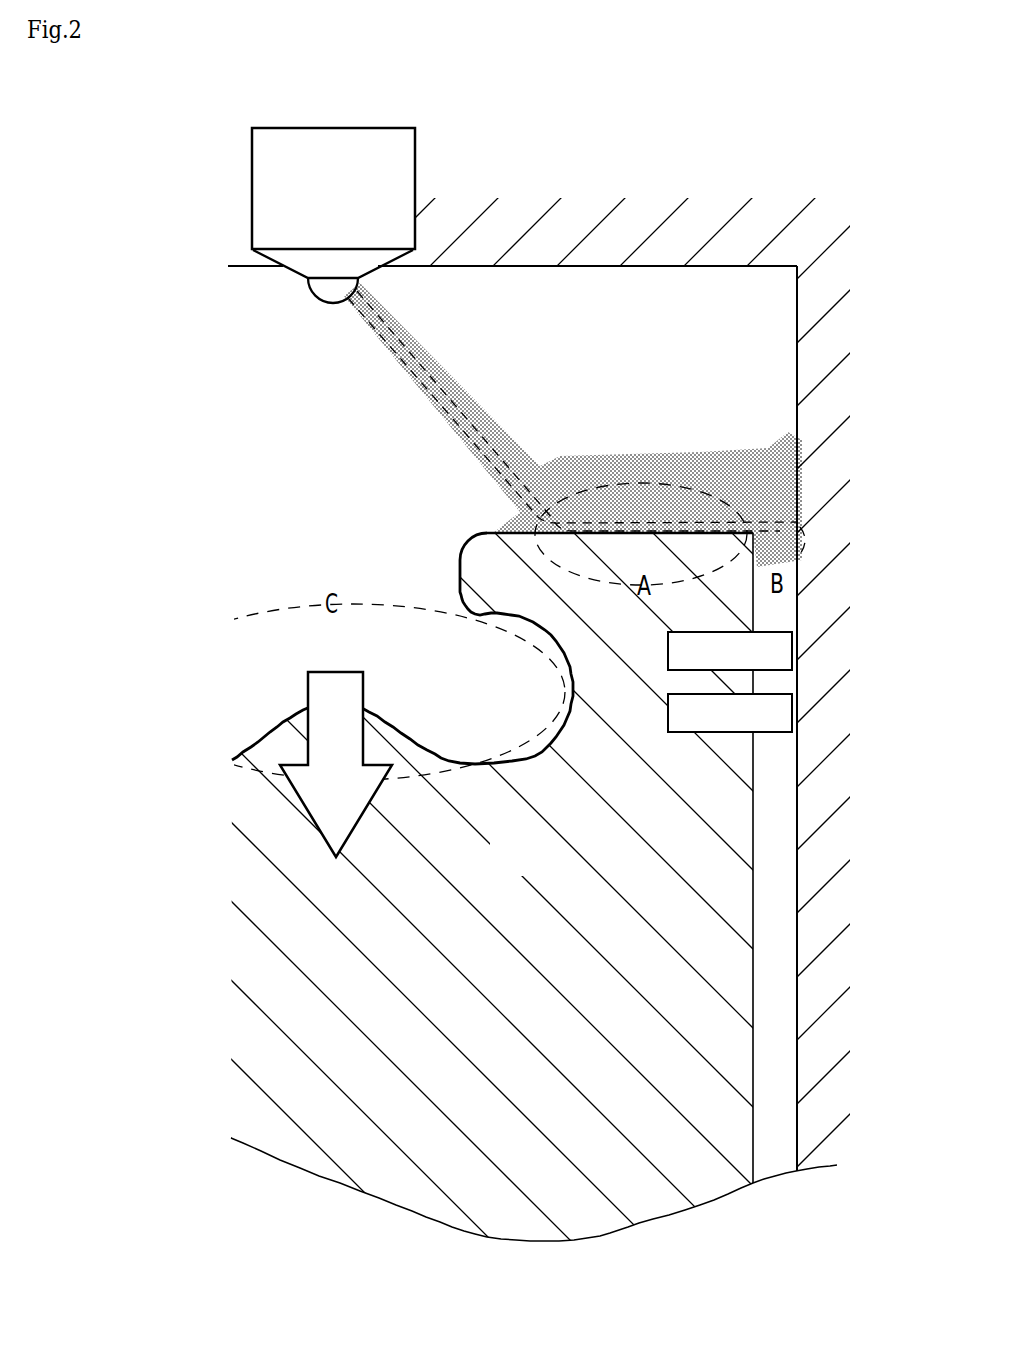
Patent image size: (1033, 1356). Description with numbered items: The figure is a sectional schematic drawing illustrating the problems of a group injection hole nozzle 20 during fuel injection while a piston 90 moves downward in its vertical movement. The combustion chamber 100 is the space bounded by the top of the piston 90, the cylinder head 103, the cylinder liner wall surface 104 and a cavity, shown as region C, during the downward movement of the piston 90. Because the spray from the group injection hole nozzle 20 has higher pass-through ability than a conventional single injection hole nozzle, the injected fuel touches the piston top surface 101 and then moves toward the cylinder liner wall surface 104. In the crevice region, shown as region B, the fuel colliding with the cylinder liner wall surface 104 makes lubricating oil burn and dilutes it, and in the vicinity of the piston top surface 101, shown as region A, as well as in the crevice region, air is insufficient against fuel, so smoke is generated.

The group injection hole nozzle 20 is at (413, 183).
The piston 90 is at (530, 867).
The combustion chamber 100 is at (365, 463).
The piston top surface 101 is at (593, 533).
The cylinder head 103 is at (507, 267).
The cylinder liner wall surface 104 is at (797, 367).